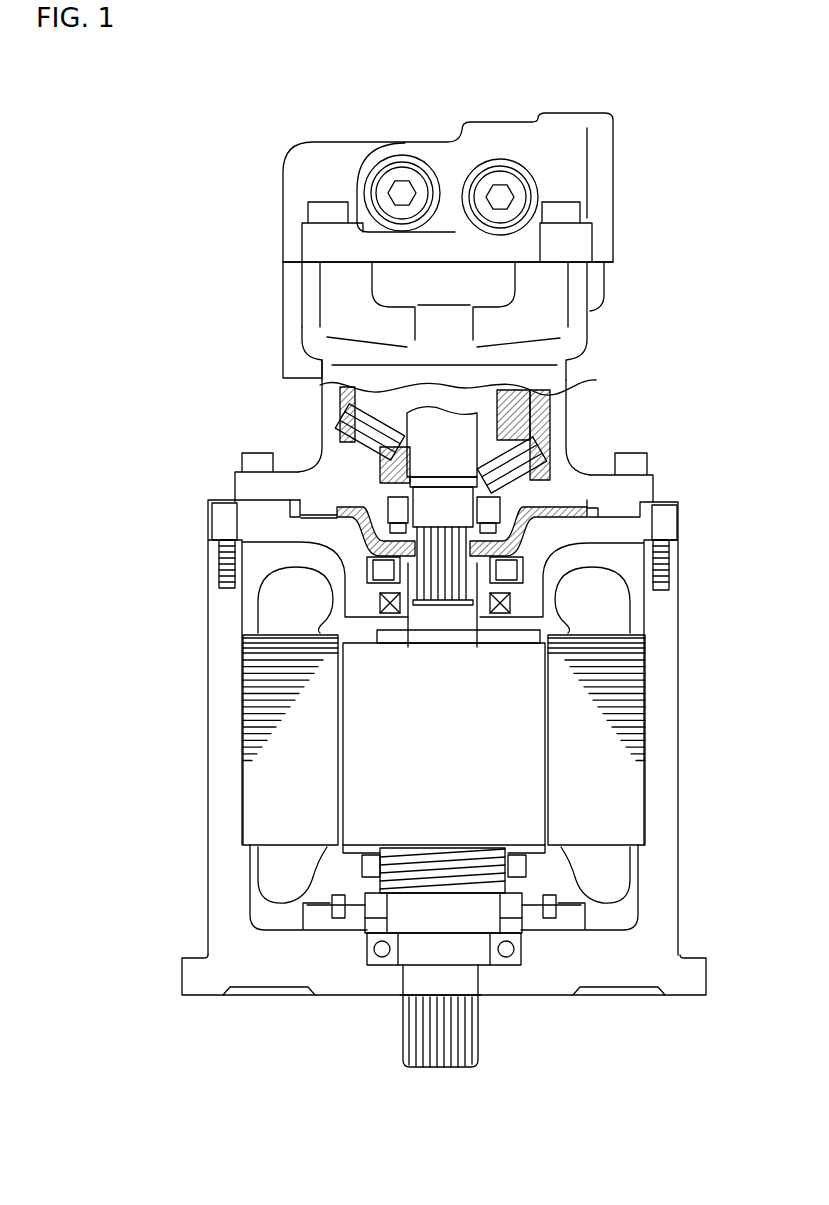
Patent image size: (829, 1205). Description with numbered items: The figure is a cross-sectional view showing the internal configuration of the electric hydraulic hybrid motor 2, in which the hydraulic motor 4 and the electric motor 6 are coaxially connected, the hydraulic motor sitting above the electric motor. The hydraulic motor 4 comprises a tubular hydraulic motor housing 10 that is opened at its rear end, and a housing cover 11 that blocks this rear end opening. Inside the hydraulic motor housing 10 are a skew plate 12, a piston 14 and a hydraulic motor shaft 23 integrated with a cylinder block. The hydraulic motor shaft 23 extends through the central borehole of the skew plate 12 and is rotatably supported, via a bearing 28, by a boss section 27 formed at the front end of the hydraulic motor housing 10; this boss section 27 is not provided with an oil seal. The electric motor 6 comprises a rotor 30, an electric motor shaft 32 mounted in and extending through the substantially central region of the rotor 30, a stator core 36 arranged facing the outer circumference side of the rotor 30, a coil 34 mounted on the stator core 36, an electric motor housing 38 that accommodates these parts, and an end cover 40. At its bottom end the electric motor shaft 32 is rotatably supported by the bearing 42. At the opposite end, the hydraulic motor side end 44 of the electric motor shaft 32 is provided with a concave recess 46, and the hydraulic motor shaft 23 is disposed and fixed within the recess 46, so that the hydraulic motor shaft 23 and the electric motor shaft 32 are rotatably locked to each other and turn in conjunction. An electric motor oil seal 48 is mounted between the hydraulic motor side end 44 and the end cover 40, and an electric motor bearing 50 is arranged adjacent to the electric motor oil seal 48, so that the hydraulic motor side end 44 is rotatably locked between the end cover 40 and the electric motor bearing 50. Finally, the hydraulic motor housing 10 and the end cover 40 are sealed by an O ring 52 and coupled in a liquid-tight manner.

The electric hydraulic hybrid motor 2 is at (678, 424).
The hydraulic motor 4 is at (636, 205).
The electric motor 6 is at (724, 660).
The hydraulic motor housing 10 is at (590, 338).
The housing cover 11 is at (605, 143).
The skew plate 12 is at (523, 492).
The piston 14 is at (548, 386).
The hydraulic motor shaft 23 is at (432, 548).
The boss section 27 is at (392, 535).
The bearing 28 is at (503, 513).
The rotor 30 is at (515, 785).
The electric motor shaft 32 is at (470, 615).
The coil 34 is at (607, 593).
The stator core 36 is at (640, 705).
The electric motor housing 38 is at (665, 828).
The end cover 40 is at (618, 513).
The bearing 42 is at (512, 948).
The hydraulic motor side end 44 is at (408, 612).
The concave recess 46 is at (418, 610).
The electric motor oil seal 48 is at (503, 610).
The electric motor bearing 50 is at (508, 575).
The O ring 52 is at (291, 512).